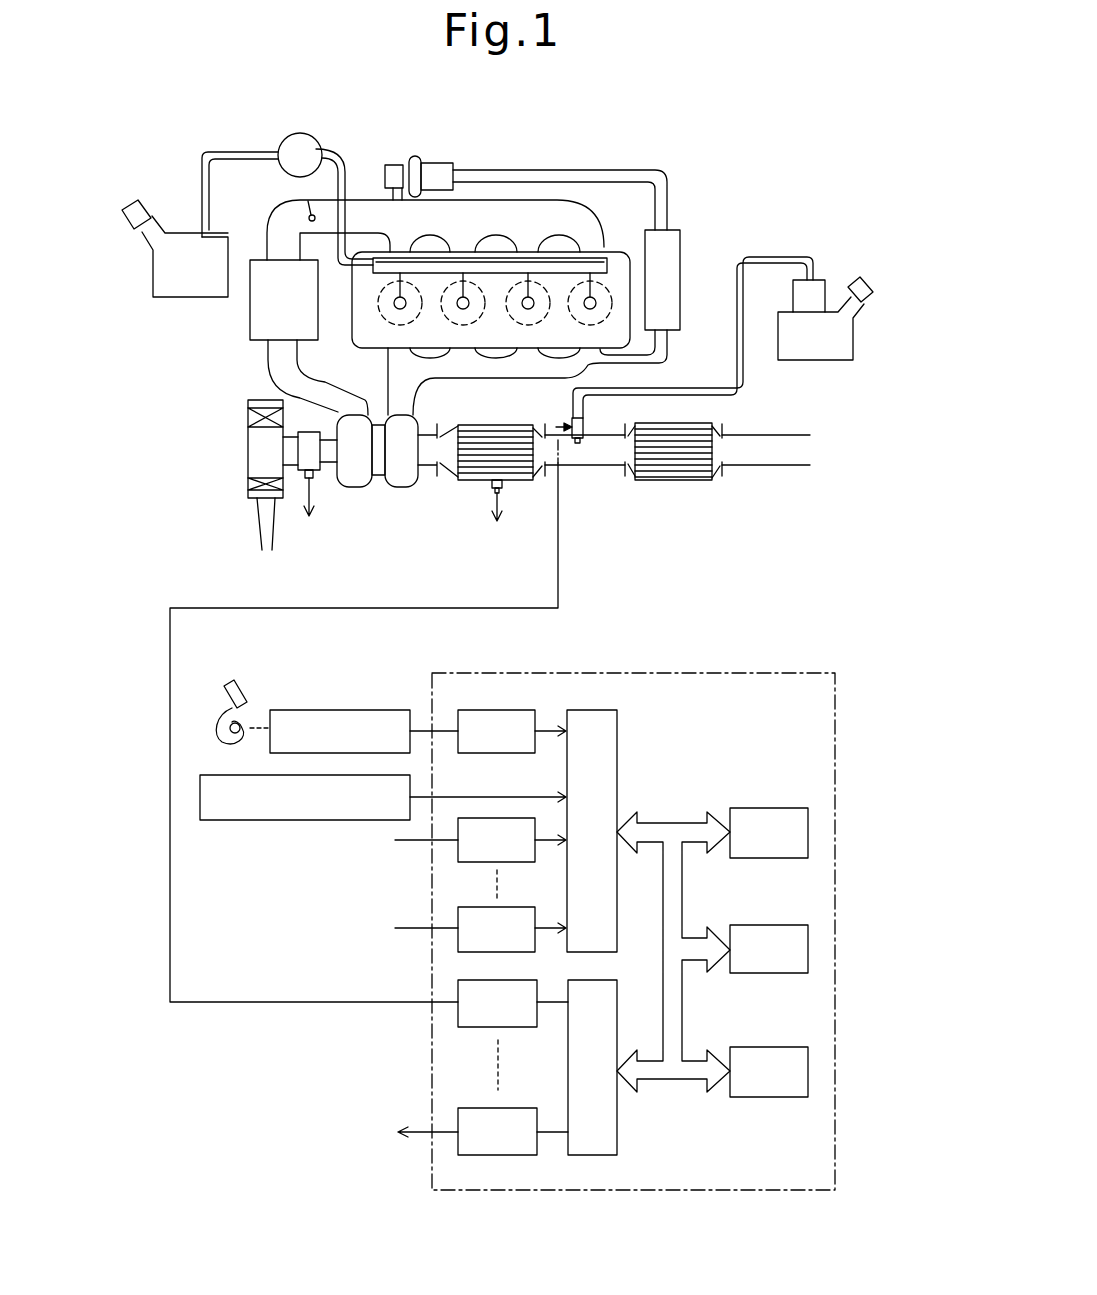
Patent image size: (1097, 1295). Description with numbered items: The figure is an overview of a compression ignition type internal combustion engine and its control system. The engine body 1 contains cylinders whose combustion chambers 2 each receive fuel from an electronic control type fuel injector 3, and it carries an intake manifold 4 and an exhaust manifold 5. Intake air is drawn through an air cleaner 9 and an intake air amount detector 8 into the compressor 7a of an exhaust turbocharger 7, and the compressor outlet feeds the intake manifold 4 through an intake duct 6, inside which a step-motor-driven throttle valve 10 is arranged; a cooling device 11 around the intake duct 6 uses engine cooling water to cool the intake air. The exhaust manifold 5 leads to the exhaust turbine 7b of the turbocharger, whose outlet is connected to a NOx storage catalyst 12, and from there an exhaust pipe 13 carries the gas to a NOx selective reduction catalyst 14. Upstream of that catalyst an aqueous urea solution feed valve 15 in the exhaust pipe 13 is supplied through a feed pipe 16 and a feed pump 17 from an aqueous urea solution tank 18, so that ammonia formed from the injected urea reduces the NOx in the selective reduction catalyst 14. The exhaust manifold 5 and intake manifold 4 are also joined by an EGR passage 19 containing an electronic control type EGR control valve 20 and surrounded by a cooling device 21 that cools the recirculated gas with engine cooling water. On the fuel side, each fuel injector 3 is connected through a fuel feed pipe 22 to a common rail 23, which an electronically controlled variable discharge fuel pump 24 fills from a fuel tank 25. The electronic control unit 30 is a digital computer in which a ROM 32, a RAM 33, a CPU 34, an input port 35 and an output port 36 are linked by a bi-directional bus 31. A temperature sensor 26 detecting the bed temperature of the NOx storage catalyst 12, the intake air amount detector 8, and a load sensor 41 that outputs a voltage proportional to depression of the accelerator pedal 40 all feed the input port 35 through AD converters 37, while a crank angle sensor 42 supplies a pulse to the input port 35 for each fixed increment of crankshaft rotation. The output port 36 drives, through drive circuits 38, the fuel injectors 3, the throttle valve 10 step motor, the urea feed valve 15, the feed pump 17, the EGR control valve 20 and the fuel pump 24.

The engine body 1 is at (606, 241).
The combustion chamber 2 is at (386, 323).
The fuel injector 3 is at (394, 304).
The intake manifold 4 is at (525, 213).
The exhaust manifold 5 is at (468, 380).
The intake duct 6 is at (273, 235).
The exhaust turbocharger 7 is at (346, 459).
The compressor 7a is at (352, 481).
The exhaust turbine 7b is at (405, 482).
The intake air amount detector 8 is at (304, 472).
The air cleaner 9 is at (249, 462).
The throttle valve 10 is at (309, 214).
The cooling device 11 is at (254, 322).
The NOx storage catalyst 12 is at (477, 480).
The exhaust pipe 13 is at (590, 470).
The NOx selective reduction catalyst 14 is at (670, 473).
The aqueous urea solution feed valve 15 is at (586, 424).
The feed pipe 16 is at (745, 380).
The feed pump 17 is at (815, 280).
The aqueous urea solution tank 18 is at (823, 361).
The EGR passage 19 is at (608, 172).
The EGR control valve 20 is at (432, 165).
The cooling device 21 is at (682, 256).
The fuel feed pipe 22 is at (373, 274).
The common rail 23 is at (487, 264).
The fuel pump 24 is at (318, 143).
The fuel tank 25 is at (152, 298).
The temperature sensor 26 is at (504, 496).
The electronic control unit 30 is at (842, 702).
The bi-directional bus 31 is at (667, 822).
The ROM 32 is at (762, 808).
The RAM 33 is at (762, 925).
The CPU 34 is at (762, 1047).
The input port 35 is at (590, 710).
The output port 36 is at (617, 1133).
The AD converter 37 is at (498, 709).
The drive circuit 38 is at (458, 1117).
The accelerator pedal 40 is at (242, 690).
The load sensor 41 is at (360, 710).
The crank angle sensor 42 is at (290, 821).